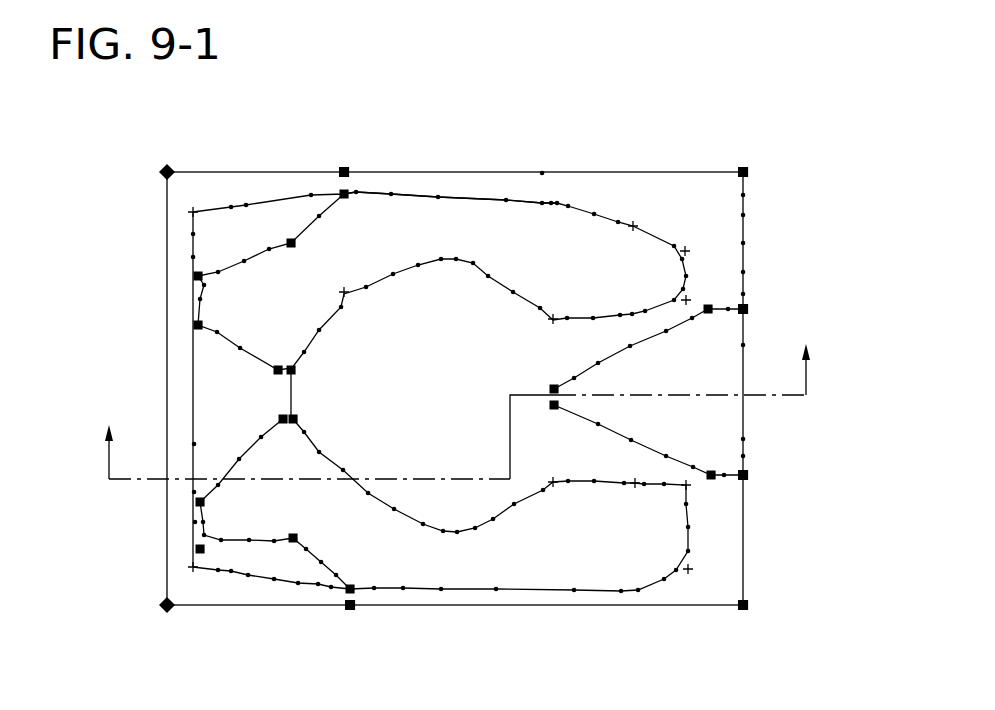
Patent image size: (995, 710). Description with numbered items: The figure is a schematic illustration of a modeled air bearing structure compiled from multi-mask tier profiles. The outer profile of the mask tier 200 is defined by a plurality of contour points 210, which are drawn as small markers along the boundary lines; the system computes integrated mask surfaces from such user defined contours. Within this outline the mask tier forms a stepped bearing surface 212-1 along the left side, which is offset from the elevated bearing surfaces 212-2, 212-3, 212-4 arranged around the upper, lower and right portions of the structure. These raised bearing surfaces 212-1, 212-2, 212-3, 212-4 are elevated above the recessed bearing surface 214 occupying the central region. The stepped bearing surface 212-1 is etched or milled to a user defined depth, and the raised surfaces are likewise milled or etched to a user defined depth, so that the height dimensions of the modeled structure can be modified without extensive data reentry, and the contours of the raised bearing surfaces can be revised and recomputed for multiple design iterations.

The mask tier 200 is at (633, 167).
The contour points 210 is at (505, 198).
The stepped bearing surface 212-1 is at (242, 389).
The elevated bearing surface 212-2 is at (439, 281).
The elevated bearing surface 212-3 is at (440, 505).
The elevated bearing surface 212-4 is at (712, 379).
The recessed bearing surface 214 is at (460, 480).